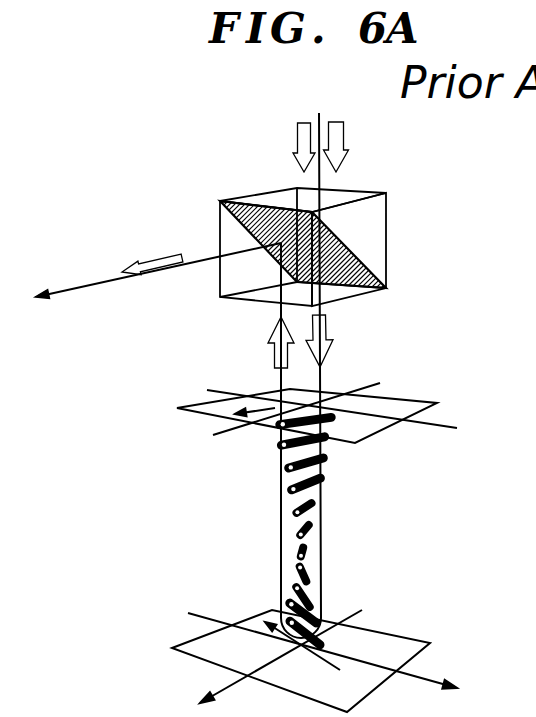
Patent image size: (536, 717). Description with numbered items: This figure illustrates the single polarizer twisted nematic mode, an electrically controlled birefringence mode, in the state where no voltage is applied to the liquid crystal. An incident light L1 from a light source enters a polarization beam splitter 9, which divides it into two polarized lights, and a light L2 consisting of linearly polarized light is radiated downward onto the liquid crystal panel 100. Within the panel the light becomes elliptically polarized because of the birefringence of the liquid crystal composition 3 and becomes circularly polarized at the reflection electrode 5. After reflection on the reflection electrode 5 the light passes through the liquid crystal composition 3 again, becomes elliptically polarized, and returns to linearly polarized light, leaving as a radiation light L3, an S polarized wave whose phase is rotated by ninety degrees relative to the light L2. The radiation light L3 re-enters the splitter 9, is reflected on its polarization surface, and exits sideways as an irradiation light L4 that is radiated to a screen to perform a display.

The polarization beam splitter 9 is at (375, 245).
The liquid crystal panel 100 is at (397, 435).
The liquid crystal composition 3 is at (308, 525).
The reflection electrode 5 is at (383, 637).
The incident light L1 is at (343, 133).
The light L2 is at (330, 338).
The radiation light L3 is at (272, 357).
The irradiation light L4 is at (157, 265).